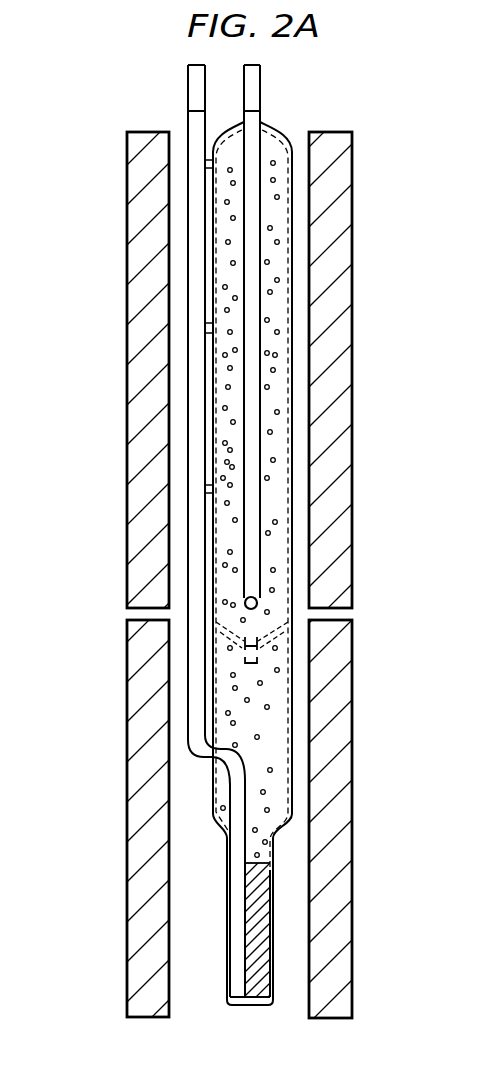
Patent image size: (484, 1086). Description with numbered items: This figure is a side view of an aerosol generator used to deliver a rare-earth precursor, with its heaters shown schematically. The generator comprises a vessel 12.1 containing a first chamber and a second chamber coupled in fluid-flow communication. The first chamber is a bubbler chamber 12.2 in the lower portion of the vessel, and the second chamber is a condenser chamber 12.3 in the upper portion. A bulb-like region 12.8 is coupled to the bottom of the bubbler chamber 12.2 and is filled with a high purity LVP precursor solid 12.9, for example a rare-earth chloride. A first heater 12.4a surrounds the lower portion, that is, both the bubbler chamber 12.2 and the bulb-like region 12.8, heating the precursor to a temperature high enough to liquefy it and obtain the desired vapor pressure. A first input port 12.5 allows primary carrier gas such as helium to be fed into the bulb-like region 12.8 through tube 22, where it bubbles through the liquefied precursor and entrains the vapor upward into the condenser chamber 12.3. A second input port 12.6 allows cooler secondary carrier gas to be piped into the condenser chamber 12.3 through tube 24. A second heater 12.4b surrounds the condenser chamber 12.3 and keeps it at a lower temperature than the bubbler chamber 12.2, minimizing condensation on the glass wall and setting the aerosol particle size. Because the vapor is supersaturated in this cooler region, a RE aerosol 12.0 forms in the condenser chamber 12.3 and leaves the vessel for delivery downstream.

The tube 22 is at (188, 82).
The tube 24 is at (262, 96).
The RE aerosol 12.0 is at (223, 287).
The vessel 12.1 is at (216, 417).
The bubbler chamber 12.2 is at (273, 727).
The condenser chamber 12.3 is at (227, 462).
The first heater 12.4a is at (140, 845).
The second heater 12.4b is at (127, 204).
The first input port 12.5 is at (190, 757).
The second input port 12.6 is at (258, 597).
The bulb-like region 12.8 is at (273, 965).
The LVP precursor solid 12.9 is at (260, 903).